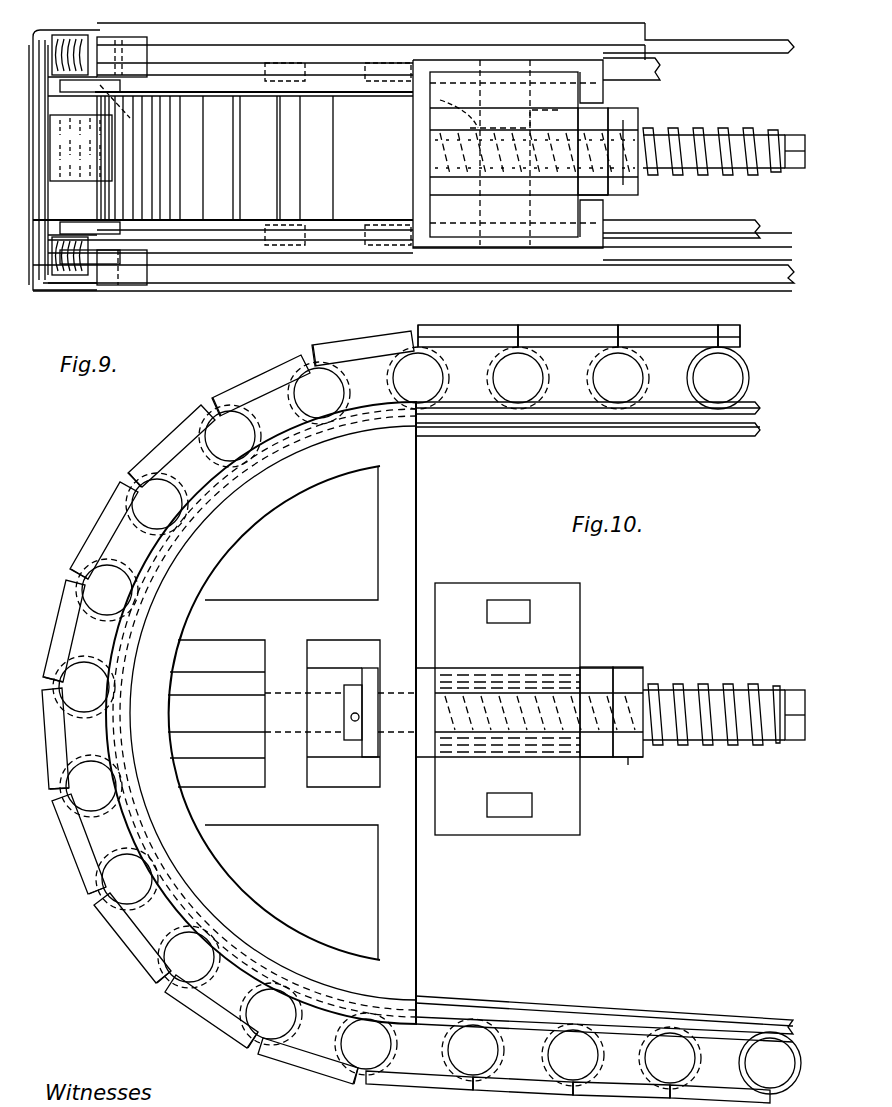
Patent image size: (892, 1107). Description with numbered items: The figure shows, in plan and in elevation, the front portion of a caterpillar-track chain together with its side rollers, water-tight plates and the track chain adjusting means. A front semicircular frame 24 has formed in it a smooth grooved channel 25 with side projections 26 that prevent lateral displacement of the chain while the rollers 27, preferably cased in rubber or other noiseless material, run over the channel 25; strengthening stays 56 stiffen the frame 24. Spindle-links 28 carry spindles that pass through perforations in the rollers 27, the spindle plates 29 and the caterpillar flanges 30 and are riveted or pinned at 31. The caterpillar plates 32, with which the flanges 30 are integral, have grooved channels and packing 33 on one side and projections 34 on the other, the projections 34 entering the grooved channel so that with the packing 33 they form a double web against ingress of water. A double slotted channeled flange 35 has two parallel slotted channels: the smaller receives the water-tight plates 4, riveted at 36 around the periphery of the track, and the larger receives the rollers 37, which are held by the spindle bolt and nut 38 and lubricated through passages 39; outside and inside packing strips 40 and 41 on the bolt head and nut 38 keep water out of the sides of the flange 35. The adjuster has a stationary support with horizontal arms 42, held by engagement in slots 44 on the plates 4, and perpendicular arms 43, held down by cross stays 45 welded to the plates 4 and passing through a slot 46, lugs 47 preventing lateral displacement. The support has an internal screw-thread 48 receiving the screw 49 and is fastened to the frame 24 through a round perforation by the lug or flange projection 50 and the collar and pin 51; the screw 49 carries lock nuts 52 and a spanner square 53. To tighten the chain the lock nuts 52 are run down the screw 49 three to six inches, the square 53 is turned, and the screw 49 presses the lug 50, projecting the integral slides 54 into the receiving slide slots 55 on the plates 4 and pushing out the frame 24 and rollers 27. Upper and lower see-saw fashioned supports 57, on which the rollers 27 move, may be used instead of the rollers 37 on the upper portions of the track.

In FIG. 9, the water-tight plates 4 is at (200, 70).
In FIG. 10, the front semicircular frame 24 is at (400, 498).
In FIG. 9, the smooth grooved channel 25 is at (238, 158).
In FIG. 10, the smooth grooved channel 25 is at (295, 440).
In FIG. 9, the side projections 26 is at (355, 230).
In FIG. 10, the side projections 26 is at (118, 655).
In FIG. 9, the rollers 27 is at (110, 158).
In FIG. 10, the rollers 27 is at (430, 410).
In FIG. 9, the spindle-links 28 is at (85, 245).
In FIG. 10, the spindle-links 28 is at (680, 418).
In FIG. 9, the spindle plates 29 is at (110, 95).
In FIG. 9, the caterpillar flanges 30 is at (88, 75).
In FIG. 9, the rivet or pin 31 is at (85, 40).
In FIG. 10, the rivet or pin 31 is at (730, 378).
In FIG. 9, the caterpillar plates 32 is at (45, 48).
In FIG. 10, the caterpillar plates 32 is at (100, 505).
In FIG. 9, the packing 33 is at (40, 285).
In FIG. 10, the packing 33 is at (140, 460).
In FIG. 10, the projections 34 is at (745, 327).
In FIG. 9, the double slotted channeled flange 35 is at (130, 40).
In FIG. 9, the rivets 36 is at (130, 275).
In FIG. 9, the rollers 37 is at (70, 40).
In FIG. 9, the spindle bolt and nut 38 is at (90, 283).
In FIG. 9, the lubrication passages 39 is at (130, 100).
In FIG. 9, the outside packing strip 40 is at (650, 40).
In FIG. 9, the inside packing strip 41 is at (200, 230).
In FIG. 9, the center or horizontal arms 42 is at (570, 88).
In FIG. 10, the center or horizontal arms 42 is at (585, 665).
In FIG. 9, the upper or perpendicular arms 43 is at (455, 185).
In FIG. 10, the upper or perpendicular arms 43 is at (572, 600).
In FIG. 9, the slots 44 is at (585, 60).
In FIG. 9, the cross stays 45 is at (482, 70).
In FIG. 10, the slot 46 is at (498, 612).
In FIG. 9, the lugs 47 is at (490, 125).
In FIG. 9, the internal screw-thread 48 is at (468, 125).
In FIG. 10, the internal screw-thread 48 is at (630, 680).
In FIG. 9, the screw 49 is at (706, 130).
In FIG. 10, the screw 49 is at (703, 690).
In FIG. 9, the lug or flange projection 50 is at (420, 125).
In FIG. 10, the lug or flange projection 50 is at (445, 672).
In FIG. 10, the collar and pin 51 is at (372, 690).
In FIG. 9, the lock nuts 52 is at (628, 118).
In FIG. 10, the lock nuts 52 is at (622, 757).
In FIG. 9, the spanner square 53 is at (780, 135).
In FIG. 10, the spanner square 53 is at (790, 690).
In FIG. 9, the integral slides 54 is at (385, 70).
In FIG. 10, the integral slides 54 is at (344, 712).
In FIG. 9, the receiving slide slots 55 is at (230, 47).
In FIG. 10, the strengthening stays 56 is at (274, 713).
In FIG. 10, the see-saw fashioned supports 57 is at (521, 425).